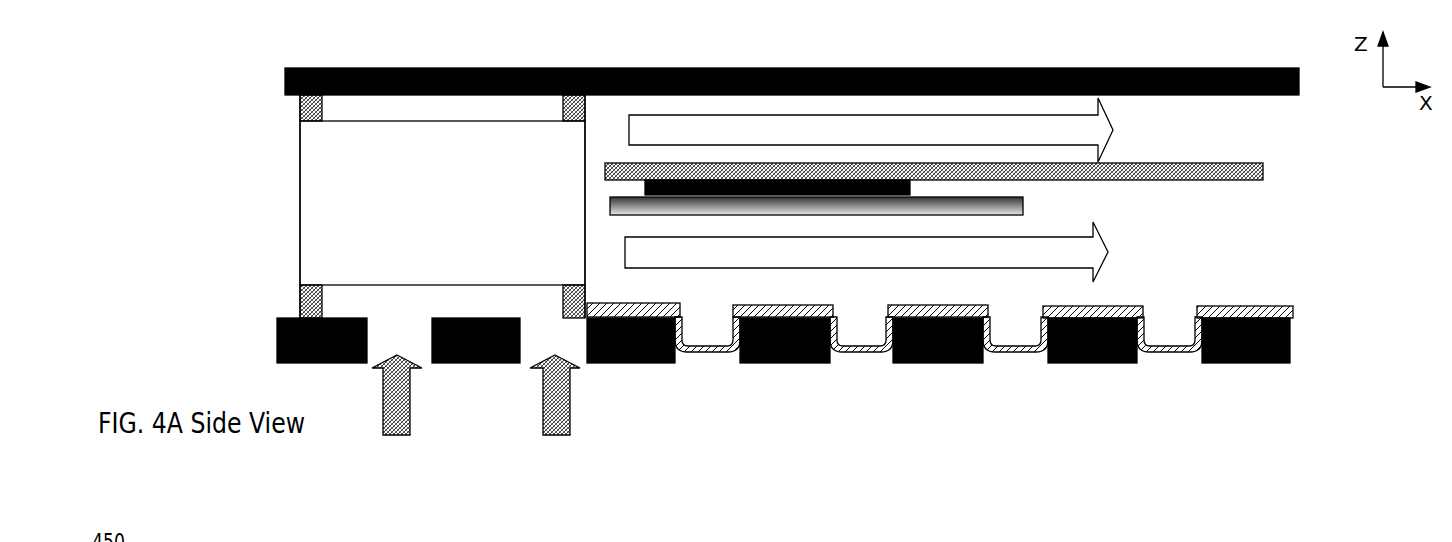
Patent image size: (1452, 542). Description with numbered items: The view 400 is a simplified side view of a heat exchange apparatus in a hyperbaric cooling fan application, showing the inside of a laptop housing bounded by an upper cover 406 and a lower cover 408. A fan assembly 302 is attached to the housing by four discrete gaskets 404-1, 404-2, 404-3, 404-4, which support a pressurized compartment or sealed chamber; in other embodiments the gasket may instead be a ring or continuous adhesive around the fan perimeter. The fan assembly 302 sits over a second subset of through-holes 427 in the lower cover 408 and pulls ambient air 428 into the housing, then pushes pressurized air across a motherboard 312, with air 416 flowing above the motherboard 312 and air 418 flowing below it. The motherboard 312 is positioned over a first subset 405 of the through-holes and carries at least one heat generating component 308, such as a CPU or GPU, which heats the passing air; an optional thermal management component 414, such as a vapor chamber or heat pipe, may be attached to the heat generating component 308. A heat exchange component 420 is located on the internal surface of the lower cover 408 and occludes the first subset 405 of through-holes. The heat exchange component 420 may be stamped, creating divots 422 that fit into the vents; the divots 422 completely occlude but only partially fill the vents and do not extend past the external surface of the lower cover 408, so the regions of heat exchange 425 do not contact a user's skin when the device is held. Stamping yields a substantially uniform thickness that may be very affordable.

The view 400 is at (100, 118).
The fan assembly 302 is at (438, 189).
The heat generating component 308 is at (910, 188).
The motherboard 312 is at (1258, 180).
The gasket 404-1 is at (298, 105).
The gasket 404-2 is at (568, 123).
The gasket 404-3 is at (298, 306).
The gasket 404-4 is at (562, 306).
The first subset of the plurality of through-holes 405 is at (668, 460).
The upper cover 406 is at (1290, 95).
The lower cover 408 is at (1290, 330).
The thermal management component 414 is at (1023, 206).
The air pushed above the motherboard 416 is at (787, 141).
The air pushed below the motherboard 418 is at (789, 263).
The heat exchange component 420 is at (1268, 306).
The divots 422 is at (1173, 313).
The regions of heat exchange 425 is at (704, 374).
The through-holes 427 is at (520, 377).
The ambient air 428 is at (540, 420).